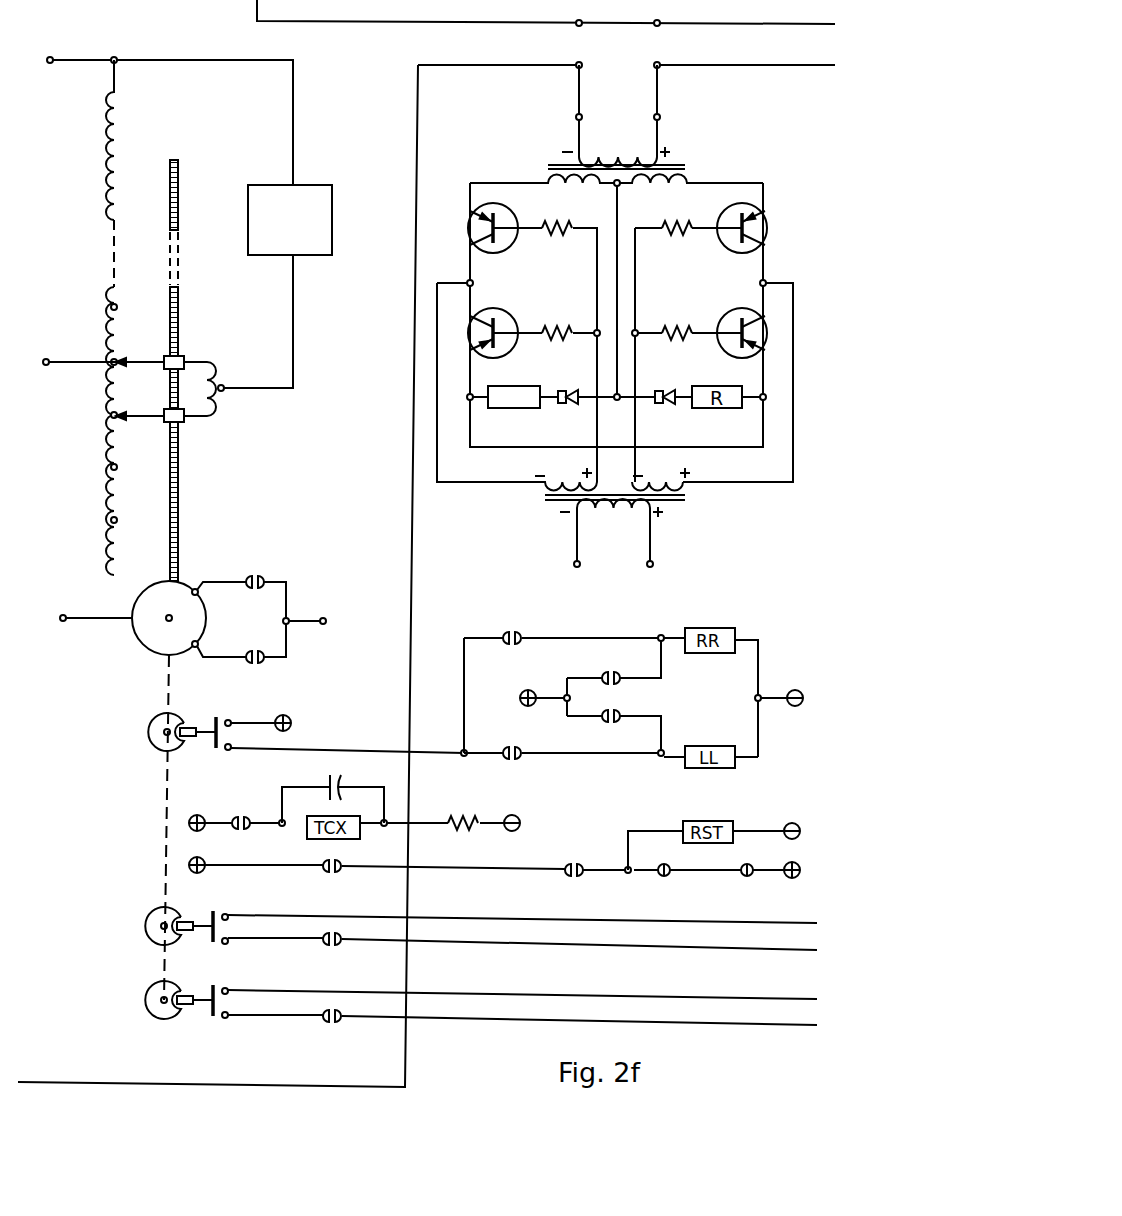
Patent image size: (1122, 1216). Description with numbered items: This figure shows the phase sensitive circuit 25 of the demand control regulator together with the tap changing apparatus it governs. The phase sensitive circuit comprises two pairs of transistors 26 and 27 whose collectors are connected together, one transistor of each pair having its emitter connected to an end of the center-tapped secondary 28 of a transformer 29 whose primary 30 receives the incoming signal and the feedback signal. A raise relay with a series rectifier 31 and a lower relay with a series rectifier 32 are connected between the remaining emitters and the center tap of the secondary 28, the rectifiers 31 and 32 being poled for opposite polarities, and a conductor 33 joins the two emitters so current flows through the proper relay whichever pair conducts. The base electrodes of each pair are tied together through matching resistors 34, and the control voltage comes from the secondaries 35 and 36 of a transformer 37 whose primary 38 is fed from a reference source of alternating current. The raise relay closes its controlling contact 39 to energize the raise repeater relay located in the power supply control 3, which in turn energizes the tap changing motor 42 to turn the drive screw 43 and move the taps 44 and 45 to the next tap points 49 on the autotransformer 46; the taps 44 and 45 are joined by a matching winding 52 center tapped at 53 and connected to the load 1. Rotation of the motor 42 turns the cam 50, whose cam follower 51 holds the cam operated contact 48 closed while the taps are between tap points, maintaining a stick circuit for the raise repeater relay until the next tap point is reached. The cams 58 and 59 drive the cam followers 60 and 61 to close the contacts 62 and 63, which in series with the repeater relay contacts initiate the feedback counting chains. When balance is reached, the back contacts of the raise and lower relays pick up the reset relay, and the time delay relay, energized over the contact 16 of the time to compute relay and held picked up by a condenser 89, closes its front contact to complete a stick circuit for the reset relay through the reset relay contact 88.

The load 1 is at (309, 184).
The power supply control 3 is at (358, 713).
The contact of time to compute relay TC 16 is at (249, 818).
The phase sensitive circuit 25 is at (755, 161).
The transistor pair 26 is at (497, 253).
The transistor pair 27 is at (738, 253).
The center-tapped secondary 28 is at (628, 186).
The transformer 29 is at (563, 160).
The primary 30 is at (617, 157).
The rectifier 31 is at (563, 390).
The rectifier 32 is at (660, 390).
The conductor 33 is at (655, 447).
The matching resistors 34 is at (558, 335).
The secondary 35 is at (566, 475).
The secondary 36 is at (712, 385).
The transformer 37 is at (672, 503).
The primary 38 is at (612, 510).
The controlling contact of raise relay R 39 is at (684, 335).
The tap changing motor 42 is at (133, 600).
The drive screw 43 is at (178, 478).
The tap 44 is at (116, 360).
The tap 45 is at (115, 418).
The autotransformer 46 is at (146, 145).
The cam operated contact 48 is at (213, 722).
The tap points 49 is at (117, 305).
The cam 50 is at (151, 720).
The cam follower 51 is at (193, 740).
The matching winding 52 is at (223, 368).
The center tap 53 is at (224, 392).
The cam 58 is at (146, 915).
The cam 59 is at (142, 996).
The cam follower 60 is at (178, 916).
The cam follower 61 is at (192, 1006).
The contact 62 is at (203, 936).
The contact 63 is at (211, 1018).
The contact of reset relay RST 88 is at (580, 865).
The condenser 89 is at (341, 783).